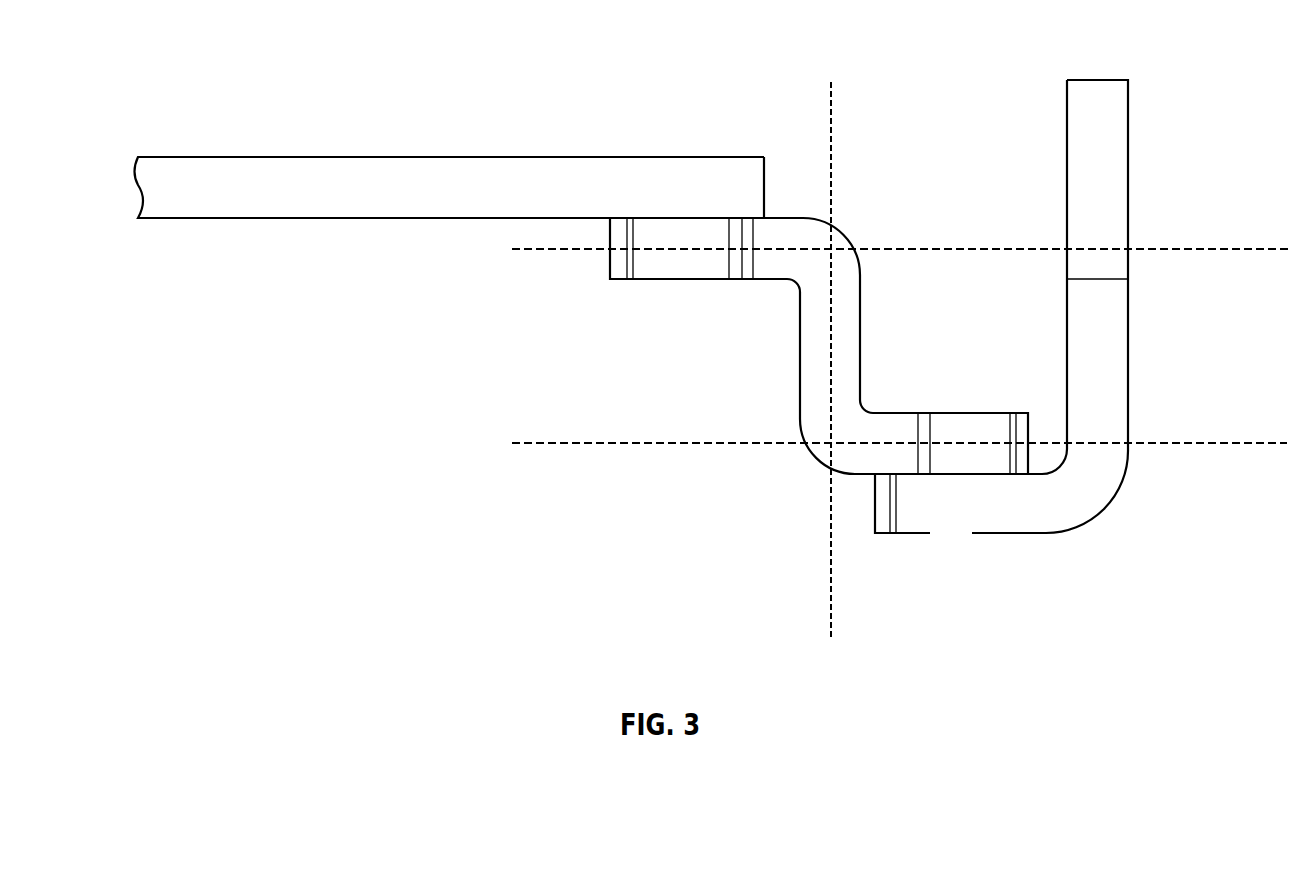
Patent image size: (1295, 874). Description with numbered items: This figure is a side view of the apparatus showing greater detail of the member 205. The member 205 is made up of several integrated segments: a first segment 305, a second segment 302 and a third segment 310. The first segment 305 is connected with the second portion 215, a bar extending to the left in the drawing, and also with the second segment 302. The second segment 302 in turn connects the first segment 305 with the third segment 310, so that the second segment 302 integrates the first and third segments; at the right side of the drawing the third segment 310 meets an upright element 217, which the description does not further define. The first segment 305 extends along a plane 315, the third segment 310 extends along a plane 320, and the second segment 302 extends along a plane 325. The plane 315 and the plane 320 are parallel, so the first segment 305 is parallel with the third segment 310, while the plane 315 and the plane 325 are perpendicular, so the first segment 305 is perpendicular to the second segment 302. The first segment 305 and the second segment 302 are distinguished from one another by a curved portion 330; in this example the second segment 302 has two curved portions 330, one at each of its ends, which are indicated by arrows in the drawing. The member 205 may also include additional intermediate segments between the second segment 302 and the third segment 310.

The member 205 is at (869, 347).
The second portion 215 is at (258, 170).
The second structural member 217 is at (1092, 90).
The second segment 302 is at (878, 279).
The first segment 305 is at (610, 289).
The third segment 310 is at (1028, 476).
The plane 315 is at (1218, 248).
The plane 320 is at (1220, 443).
The plane 325 is at (833, 128).
The curved portion 330 is at (785, 307).